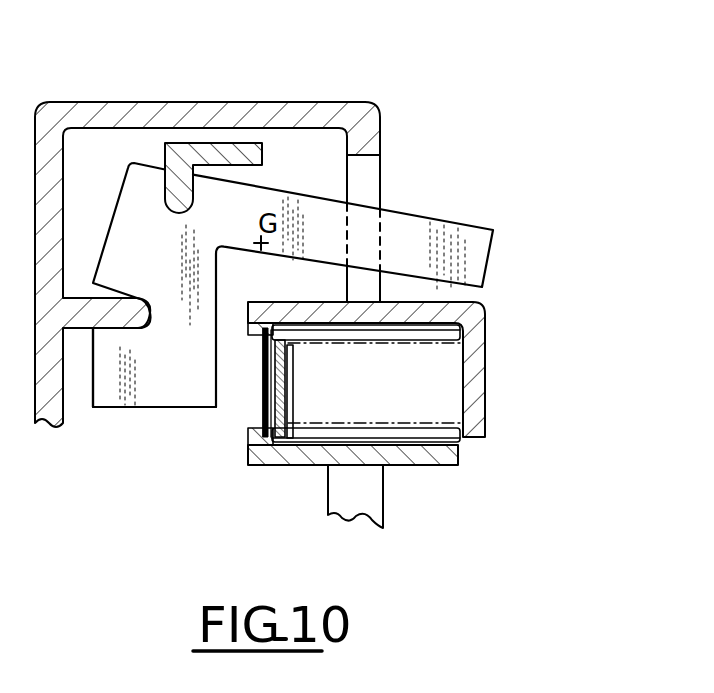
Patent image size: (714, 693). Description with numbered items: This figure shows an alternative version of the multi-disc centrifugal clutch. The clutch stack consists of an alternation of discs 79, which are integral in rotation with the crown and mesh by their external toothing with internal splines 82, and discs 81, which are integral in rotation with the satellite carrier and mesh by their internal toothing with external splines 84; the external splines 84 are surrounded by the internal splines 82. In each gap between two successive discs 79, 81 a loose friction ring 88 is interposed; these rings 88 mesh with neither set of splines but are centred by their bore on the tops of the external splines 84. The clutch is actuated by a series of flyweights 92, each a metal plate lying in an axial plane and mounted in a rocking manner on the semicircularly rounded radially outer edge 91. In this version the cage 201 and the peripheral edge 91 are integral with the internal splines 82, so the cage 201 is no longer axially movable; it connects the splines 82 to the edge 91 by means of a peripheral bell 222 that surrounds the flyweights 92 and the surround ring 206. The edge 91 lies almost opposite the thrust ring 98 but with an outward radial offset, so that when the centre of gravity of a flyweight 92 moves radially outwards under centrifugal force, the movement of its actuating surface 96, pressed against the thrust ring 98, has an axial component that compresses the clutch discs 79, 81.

The peripheral bell 222 is at (322, 112).
The surround ring 206 is at (184, 152).
The cage 201 is at (368, 177).
The flyweight 92 is at (480, 250).
The radially outer edge 91 is at (107, 408).
The external splines 84 is at (395, 447).
The internal splines 82 is at (362, 333).
The disc 81 is at (302, 430).
The loose friction ring 88 is at (285, 372).
The disc 79 is at (265, 400).
The actuating face 96 is at (214, 392).
The thrust ring 98 is at (272, 412).